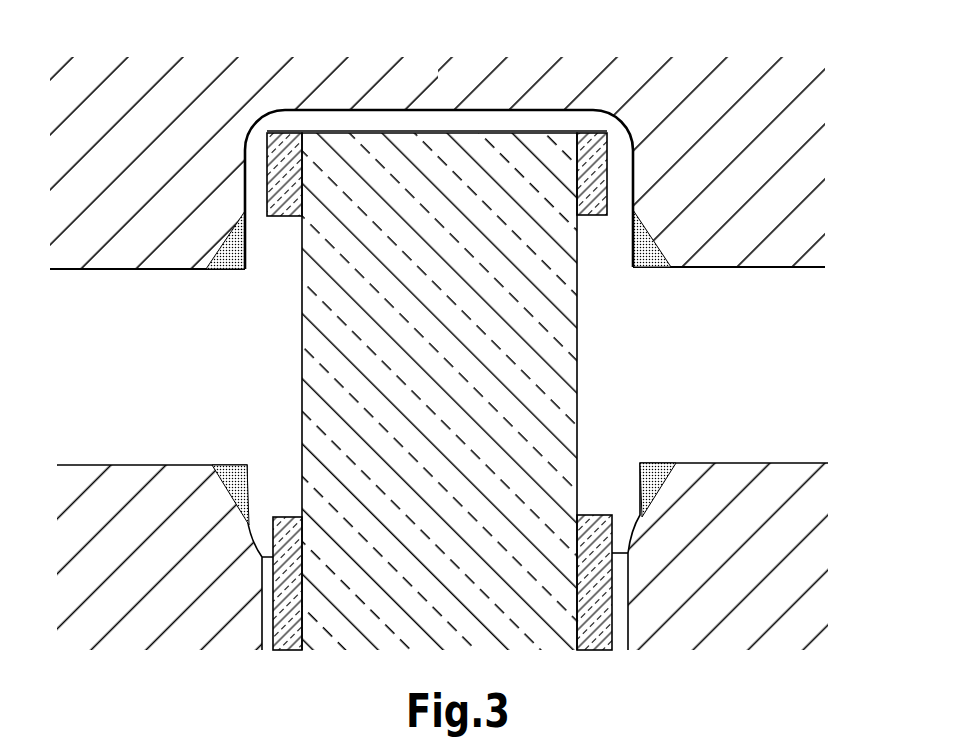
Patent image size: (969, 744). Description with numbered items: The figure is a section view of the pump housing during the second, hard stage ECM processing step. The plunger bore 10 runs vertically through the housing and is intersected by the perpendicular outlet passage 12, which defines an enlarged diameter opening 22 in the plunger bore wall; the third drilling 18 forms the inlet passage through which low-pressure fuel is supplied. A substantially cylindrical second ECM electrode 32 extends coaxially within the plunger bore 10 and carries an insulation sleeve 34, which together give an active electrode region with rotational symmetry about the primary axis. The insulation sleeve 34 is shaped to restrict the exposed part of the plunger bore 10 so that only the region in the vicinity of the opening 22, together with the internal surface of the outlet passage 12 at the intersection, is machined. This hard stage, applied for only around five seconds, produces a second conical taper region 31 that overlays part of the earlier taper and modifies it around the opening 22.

The plunger bore 10 is at (617, 612).
The outlet passage 12 is at (758, 383).
The third drilling 18 is at (118, 320).
The enlarged diameter opening 22 is at (620, 316).
The second conical taper region 31 is at (225, 254).
The second ECM electrode 32 is at (473, 110).
The insulation sleeve 34 is at (588, 170).